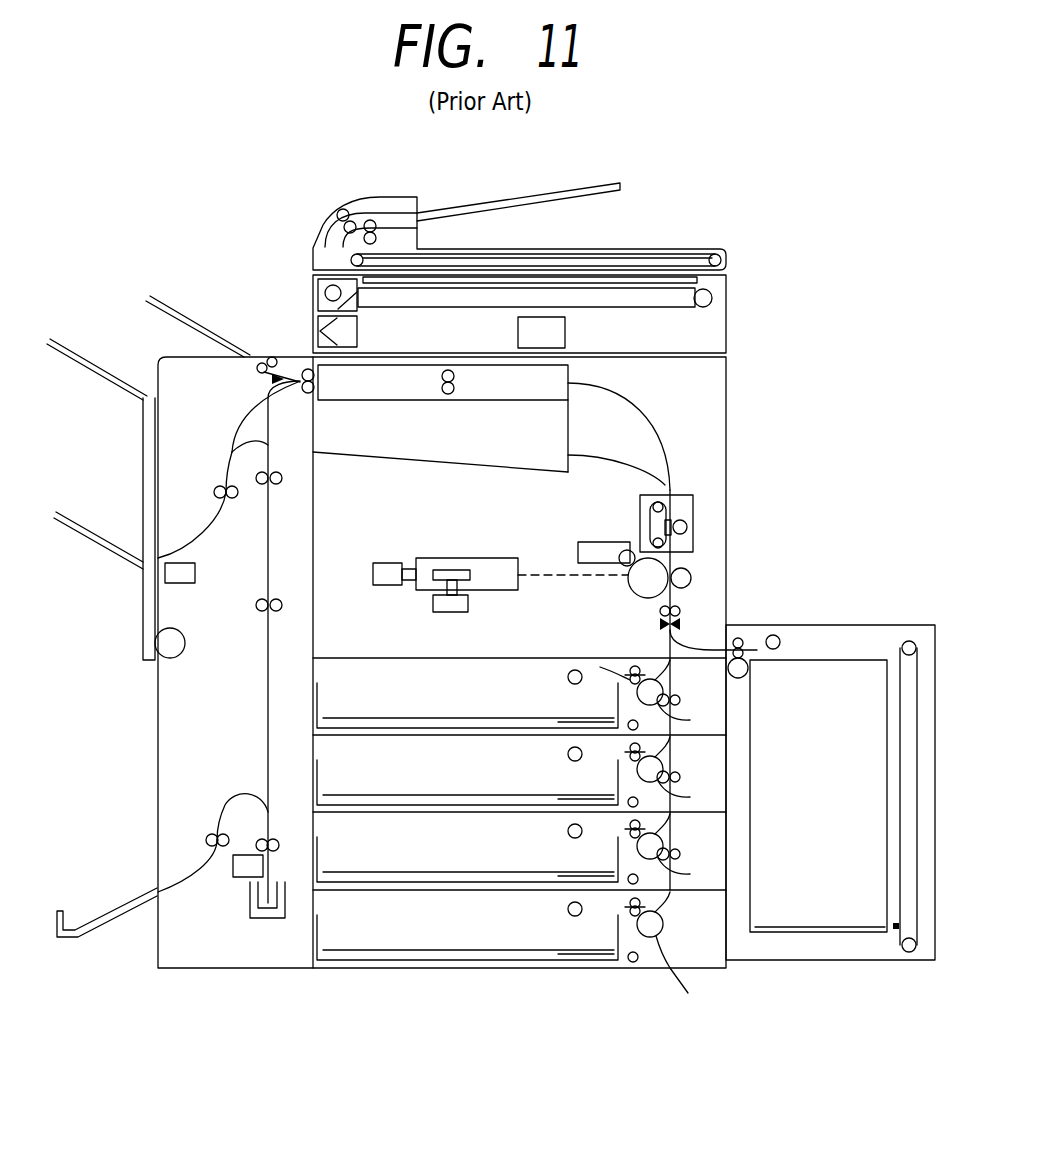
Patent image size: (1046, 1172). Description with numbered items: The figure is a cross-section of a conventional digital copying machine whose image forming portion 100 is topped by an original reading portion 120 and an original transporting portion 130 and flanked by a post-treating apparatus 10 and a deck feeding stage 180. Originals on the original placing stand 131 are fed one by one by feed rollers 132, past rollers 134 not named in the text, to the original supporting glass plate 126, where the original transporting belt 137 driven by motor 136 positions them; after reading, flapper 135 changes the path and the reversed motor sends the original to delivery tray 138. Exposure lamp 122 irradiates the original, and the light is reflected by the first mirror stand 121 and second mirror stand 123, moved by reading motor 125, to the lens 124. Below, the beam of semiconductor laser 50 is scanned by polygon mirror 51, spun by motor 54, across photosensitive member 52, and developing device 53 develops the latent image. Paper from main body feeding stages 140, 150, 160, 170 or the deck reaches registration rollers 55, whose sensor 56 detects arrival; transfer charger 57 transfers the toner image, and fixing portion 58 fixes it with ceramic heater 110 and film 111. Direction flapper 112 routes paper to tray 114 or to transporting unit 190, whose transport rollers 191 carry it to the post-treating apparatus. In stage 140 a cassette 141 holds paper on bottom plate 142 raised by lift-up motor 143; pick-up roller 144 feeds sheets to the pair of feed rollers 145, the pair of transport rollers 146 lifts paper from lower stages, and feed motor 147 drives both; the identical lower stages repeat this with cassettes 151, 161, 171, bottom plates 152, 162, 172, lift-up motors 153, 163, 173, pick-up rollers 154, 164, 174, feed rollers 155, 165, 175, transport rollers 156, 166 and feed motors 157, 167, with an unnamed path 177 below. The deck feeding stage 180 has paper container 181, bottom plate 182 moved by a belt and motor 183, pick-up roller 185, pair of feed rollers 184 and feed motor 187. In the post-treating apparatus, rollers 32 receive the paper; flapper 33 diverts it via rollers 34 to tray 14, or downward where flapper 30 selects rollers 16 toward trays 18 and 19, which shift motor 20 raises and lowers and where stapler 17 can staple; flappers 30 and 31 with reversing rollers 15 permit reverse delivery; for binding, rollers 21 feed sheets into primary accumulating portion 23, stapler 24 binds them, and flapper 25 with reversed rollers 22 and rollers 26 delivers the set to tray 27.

The post-treating apparatus 10 is at (158, 362).
The tray 14 is at (178, 300).
The reversing rollers 15 is at (277, 485).
The rollers 16 is at (218, 486).
The stapler 17 is at (195, 573).
The tray 18 is at (80, 350).
The tray 19 is at (78, 512).
The shift motor 20 is at (185, 643).
The rollers 21 is at (277, 612).
The rollers 22 is at (276, 839).
The primary accumulating portion 23 is at (262, 920).
The stapler 24 is at (240, 877).
The flapper 25 is at (258, 802).
The rollers 26 is at (209, 835).
The tray 27 is at (125, 908).
The flapper 30 is at (256, 400).
The flapper 31 is at (256, 441).
The rollers 32 is at (305, 368).
The flapper 33 is at (270, 378).
The rollers 34 is at (261, 362).
The semiconductor laser 50 is at (380, 563).
The polygon mirror 51 is at (440, 570).
The photosensitive member 52 is at (628, 580).
The developing device 53 is at (578, 548).
The motor 54 is at (445, 612).
The registration rollers 55 is at (681, 608).
The sensor 56 is at (658, 624).
The transfer charger 57 is at (692, 578).
The fixing portion 58 is at (693, 505).
The image forming portion 100 is at (726, 410).
The ceramic heater 110 is at (650, 527).
The film 111 is at (652, 507).
The direction flapper 112 is at (654, 463).
The tray 114 is at (448, 462).
The original reading portion 120 is at (726, 335).
The first mirror stand 121 is at (318, 290).
The exposure lamp 122 is at (318, 320).
The second mirror stand 123 is at (318, 338).
The lens 124 is at (518, 332).
The reading motor 125 is at (700, 306).
The original supporting glass plate 126 is at (602, 283).
The original transporting portion 130 is at (728, 262).
The original placing stand 131 is at (568, 185).
The feed rollers 132 is at (346, 209).
The conveying rollers 134 is at (376, 222).
The flapper 135 is at (333, 243).
The motor 136 is at (714, 253).
The original transporting belt 137 is at (632, 253).
The delivery tray 138 is at (562, 253).
The main body feeding stage 140 is at (355, 684).
The cassette 141 is at (323, 718).
The bottom plate 142 is at (432, 718).
The lift-up motor 143 is at (628, 725).
The pick-up roller 144 is at (568, 677).
The pair of feed rollers 145 is at (630, 672).
The pair of transport rollers 146 is at (680, 700).
The feed motor 147 is at (690, 720).
The main body feeding stage 150 is at (355, 761).
The paper stack 151 is at (323, 795).
The paper 152 is at (432, 795).
The paper detection sensor 153 is at (628, 802).
The paper size sensor 154 is at (568, 754).
The pickup roller 155 is at (670, 760).
The feed rollers 156 is at (681, 777).
The conveying path 157 is at (690, 797).
The main body feeding stage 160 is at (355, 838).
The paper stack 161 is at (323, 872).
The paper 162 is at (432, 872).
The paper detection sensor 163 is at (628, 879).
The paper size sensor 164 is at (568, 831).
The pickup roller 165 is at (670, 838).
The feed rollers 166 is at (681, 854).
The conveying path 167 is at (690, 874).
The main body feeding stage 170 is at (355, 916).
The paper stack 171 is at (323, 950).
The paper 172 is at (432, 950).
The paper detection sensor 173 is at (628, 957).
The paper size sensor 174 is at (568, 909).
The pickup roller 175 is at (663, 922).
The conveying path 177 is at (682, 981).
The deck feeding stage 180 is at (905, 625).
The paper container 181 is at (750, 803).
The bottom plate 182 is at (837, 927).
The motor 183 is at (902, 648).
The pair of feed rollers 184 is at (742, 638).
The pick-up roller 185 is at (776, 635).
The feed motor 187 is at (749, 668).
The transporting unit 190 is at (520, 400).
The transport rollers 191 is at (445, 395).